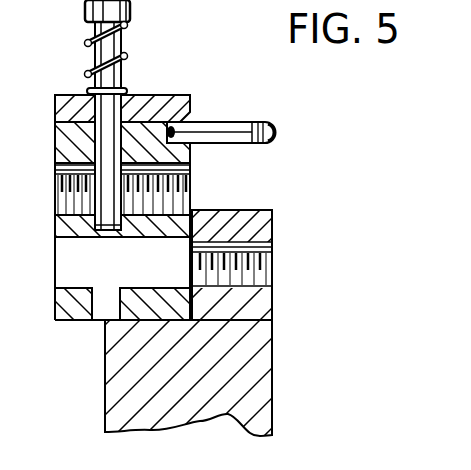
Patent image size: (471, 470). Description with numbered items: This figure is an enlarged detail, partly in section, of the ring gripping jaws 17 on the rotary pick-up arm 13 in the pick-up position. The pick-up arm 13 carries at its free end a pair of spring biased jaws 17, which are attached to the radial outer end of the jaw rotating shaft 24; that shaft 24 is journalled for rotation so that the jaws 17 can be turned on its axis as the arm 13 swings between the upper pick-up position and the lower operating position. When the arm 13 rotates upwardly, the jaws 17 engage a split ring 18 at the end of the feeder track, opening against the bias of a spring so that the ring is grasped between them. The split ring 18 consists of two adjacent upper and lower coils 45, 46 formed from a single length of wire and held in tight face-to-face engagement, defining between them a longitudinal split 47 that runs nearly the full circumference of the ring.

The rotary pick-up arm 13 is at (282, 348).
The jaw rotating shaft 24 is at (258, 310).
The spring biased jaws 17 is at (176, 98).
The split ring 18 is at (234, 120).
The upper coil 45 is at (255, 125).
The lower coil 46 is at (248, 144).
The longitudinal split 47 is at (226, 144).